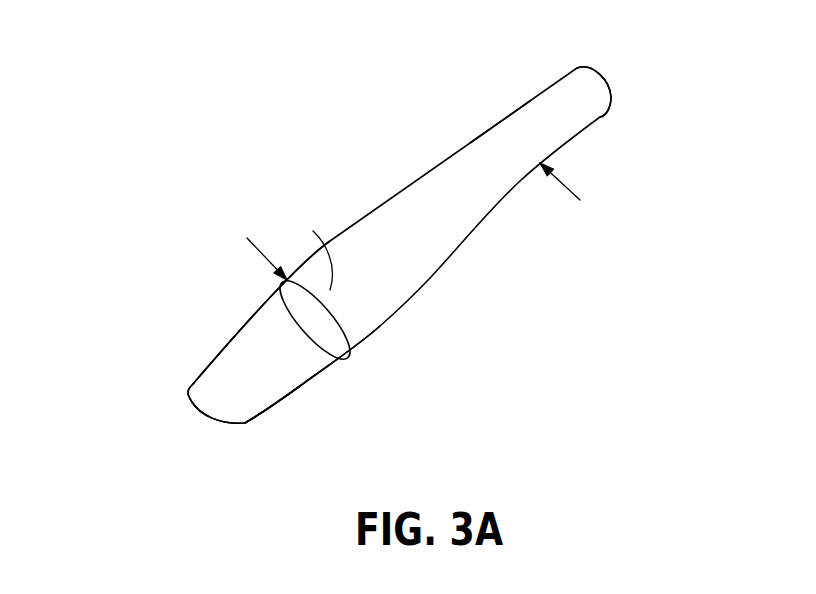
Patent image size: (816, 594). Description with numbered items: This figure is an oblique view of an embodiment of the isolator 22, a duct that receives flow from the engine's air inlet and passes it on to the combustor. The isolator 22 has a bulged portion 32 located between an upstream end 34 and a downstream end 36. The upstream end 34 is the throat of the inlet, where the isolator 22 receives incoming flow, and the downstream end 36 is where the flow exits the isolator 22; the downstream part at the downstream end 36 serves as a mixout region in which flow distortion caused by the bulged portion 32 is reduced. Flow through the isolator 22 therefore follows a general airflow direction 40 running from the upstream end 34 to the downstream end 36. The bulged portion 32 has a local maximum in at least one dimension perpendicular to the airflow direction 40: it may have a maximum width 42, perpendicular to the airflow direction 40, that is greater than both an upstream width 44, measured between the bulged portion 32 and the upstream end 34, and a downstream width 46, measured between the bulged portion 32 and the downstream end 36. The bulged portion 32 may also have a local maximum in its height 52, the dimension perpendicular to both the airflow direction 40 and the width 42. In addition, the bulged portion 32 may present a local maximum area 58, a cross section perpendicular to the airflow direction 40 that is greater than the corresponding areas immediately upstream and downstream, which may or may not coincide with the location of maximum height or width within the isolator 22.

The isolator 22 is at (268, 225).
The bulged portion 32 is at (350, 358).
The upstream end 34 is at (246, 424).
The downstream end 36 is at (602, 118).
The airflow direction 40 is at (217, 407).
The width 42 is at (367, 345).
The upstream width 44 is at (207, 362).
The downstream width 46 is at (450, 88).
The height 52 is at (306, 307).
The local maximum area 58 is at (347, 337).